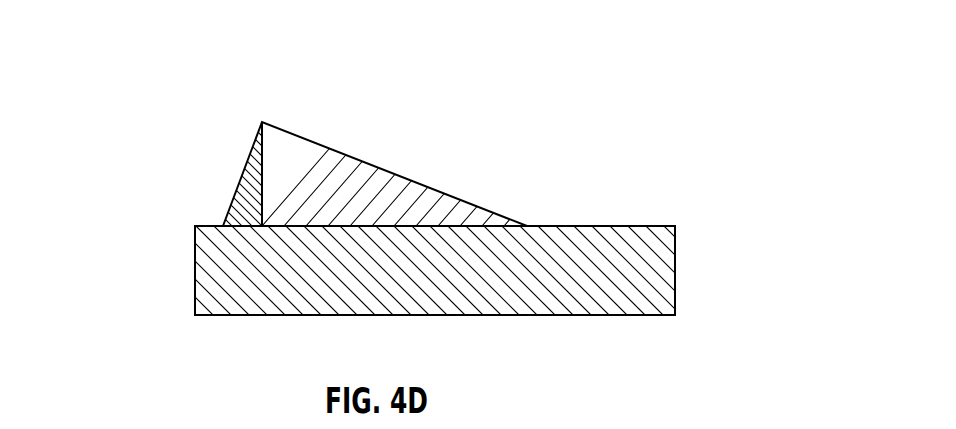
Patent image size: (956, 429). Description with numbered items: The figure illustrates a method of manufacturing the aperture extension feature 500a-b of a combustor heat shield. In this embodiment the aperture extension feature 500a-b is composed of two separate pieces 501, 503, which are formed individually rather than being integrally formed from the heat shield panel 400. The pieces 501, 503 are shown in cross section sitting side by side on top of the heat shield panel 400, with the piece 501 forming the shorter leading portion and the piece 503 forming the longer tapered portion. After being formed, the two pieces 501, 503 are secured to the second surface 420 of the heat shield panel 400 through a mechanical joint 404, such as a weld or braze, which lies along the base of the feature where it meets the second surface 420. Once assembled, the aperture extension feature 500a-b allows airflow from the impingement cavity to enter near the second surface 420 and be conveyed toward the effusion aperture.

The heat shield panel 400 is at (645, 284).
The second surface 420 is at (548, 227).
The aperture extension feature 500a-b is at (206, 117).
The first separate piece 501 is at (243, 197).
The second separate piece 503 is at (290, 143).
The mechanical joint 404 is at (342, 228).